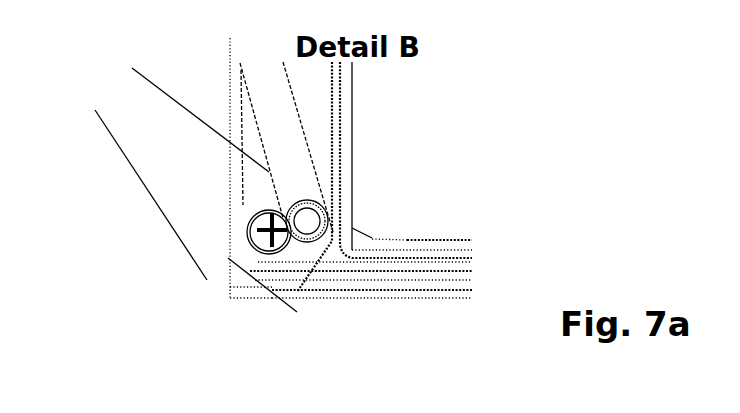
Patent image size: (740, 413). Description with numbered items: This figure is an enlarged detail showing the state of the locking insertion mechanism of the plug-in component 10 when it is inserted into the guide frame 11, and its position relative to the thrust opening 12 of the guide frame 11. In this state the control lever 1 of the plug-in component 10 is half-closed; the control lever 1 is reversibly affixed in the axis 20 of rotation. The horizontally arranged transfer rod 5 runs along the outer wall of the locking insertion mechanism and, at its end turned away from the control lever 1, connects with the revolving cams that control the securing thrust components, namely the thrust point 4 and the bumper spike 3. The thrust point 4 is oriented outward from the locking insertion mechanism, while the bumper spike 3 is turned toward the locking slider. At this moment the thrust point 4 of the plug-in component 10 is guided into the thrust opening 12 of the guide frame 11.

The control lever 1 is at (175, 165).
The bumper spike 3 is at (207, 263).
The thrust point 4 is at (290, 302).
The transfer rod 5 is at (281, 119).
The plug-in component 10 is at (388, 250).
The guide frame 11 is at (355, 295).
The thrust opening 12 is at (307, 280).
The axis of rotation 20 is at (262, 268).